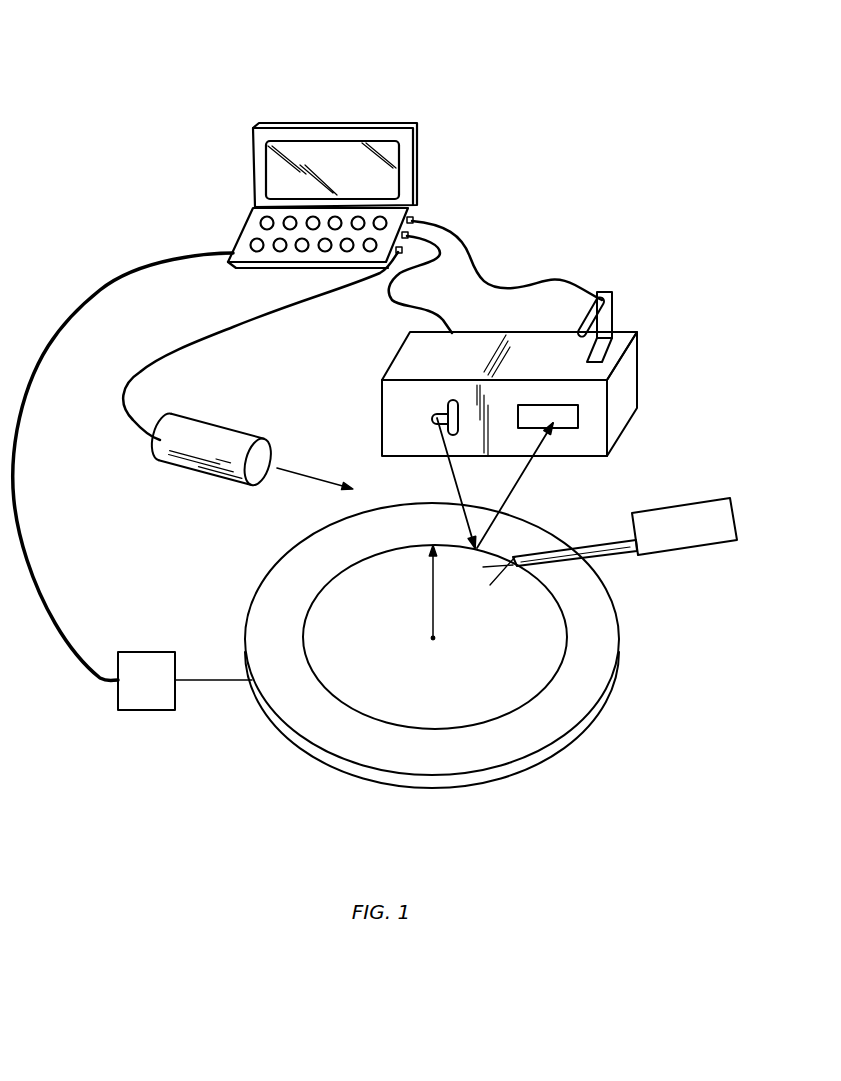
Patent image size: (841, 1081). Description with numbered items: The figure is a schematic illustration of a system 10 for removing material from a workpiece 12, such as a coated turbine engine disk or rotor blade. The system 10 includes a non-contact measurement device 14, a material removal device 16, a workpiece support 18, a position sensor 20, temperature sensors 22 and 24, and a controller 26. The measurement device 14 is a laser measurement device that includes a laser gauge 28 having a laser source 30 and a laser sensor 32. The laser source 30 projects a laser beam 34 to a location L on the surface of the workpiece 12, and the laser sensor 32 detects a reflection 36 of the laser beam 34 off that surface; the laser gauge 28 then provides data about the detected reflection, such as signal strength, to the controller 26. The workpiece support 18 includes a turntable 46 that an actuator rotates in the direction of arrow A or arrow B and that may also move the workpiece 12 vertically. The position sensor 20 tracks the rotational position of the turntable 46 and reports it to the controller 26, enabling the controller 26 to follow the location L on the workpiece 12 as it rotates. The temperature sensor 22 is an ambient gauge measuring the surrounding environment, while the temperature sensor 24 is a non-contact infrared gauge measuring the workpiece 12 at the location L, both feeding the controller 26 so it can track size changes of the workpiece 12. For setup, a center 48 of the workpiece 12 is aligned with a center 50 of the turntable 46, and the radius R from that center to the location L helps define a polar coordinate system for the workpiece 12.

The system 10 is at (145, 77).
The workpiece 12 is at (384, 669).
The non-contact measurement device 14 is at (519, 344).
The material removal device 16 is at (705, 515).
The workpiece support 18 is at (607, 638).
The position sensor 20 is at (160, 691).
The temperature sensor 22 is at (586, 320).
The temperature sensor 24 is at (197, 460).
The controller 26 is at (332, 150).
The laser gauge 28 is at (623, 373).
The laser source 30 is at (447, 405).
The laser sensor 32 is at (567, 422).
The laser beam 34 is at (460, 493).
The reflection 36 is at (515, 488).
The turntable 46 is at (612, 697).
The center of the workpiece 48 is at (427, 628).
The center of the turntable 50 is at (402, 592).